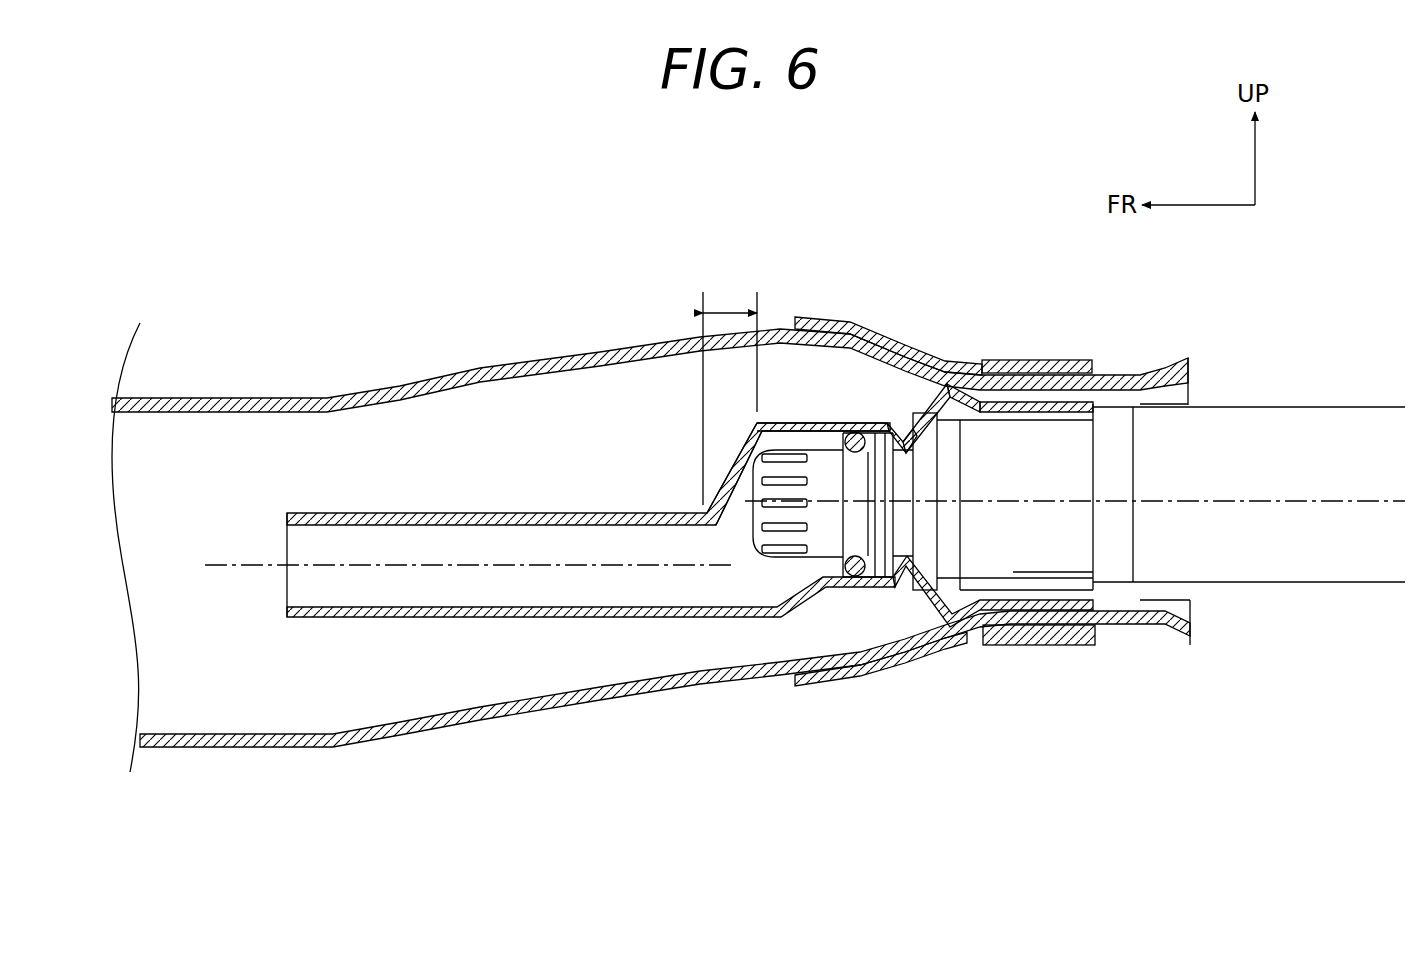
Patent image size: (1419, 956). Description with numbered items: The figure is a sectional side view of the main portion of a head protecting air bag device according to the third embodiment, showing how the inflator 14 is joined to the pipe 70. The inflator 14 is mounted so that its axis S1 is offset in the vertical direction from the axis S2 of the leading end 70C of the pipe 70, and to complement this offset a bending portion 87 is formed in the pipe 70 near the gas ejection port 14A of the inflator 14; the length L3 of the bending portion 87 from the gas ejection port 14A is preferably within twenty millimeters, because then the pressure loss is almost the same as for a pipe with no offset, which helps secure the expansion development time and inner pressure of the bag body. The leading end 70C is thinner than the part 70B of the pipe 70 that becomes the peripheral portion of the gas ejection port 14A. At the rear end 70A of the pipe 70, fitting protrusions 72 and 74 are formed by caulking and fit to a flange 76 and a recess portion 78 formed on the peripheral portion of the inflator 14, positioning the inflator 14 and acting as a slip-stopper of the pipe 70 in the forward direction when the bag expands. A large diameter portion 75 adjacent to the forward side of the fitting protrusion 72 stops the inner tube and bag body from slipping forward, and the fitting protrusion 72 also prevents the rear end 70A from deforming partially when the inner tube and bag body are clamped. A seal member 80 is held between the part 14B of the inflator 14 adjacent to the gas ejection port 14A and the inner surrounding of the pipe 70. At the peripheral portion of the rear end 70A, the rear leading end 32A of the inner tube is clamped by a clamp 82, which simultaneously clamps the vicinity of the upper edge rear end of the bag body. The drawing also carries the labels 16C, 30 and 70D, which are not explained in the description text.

The inflator 14 is at (1023, 499).
The gas ejection port 14A is at (778, 501).
The part of the inflator adjacent to the gas ejection port 14B is at (852, 513).
The reinforcing plate of outer duct 16C is at (830, 318).
The outer duct 30 is at (313, 396).
The rear leading end of the inner tube 32A is at (1143, 360).
The pipe 70 is at (709, 431).
The rear end of the pipe 70A is at (1085, 417).
The part of the pipe surrounding the gas ejection port 70B is at (788, 422).
The leading end of the pipe 70C is at (400, 513).
The end of inner pipe 70D is at (287, 580).
The fitting protrusion 72 is at (978, 410).
The fitting protrusion 74 is at (898, 447).
The large diameter portion 75 is at (947, 428).
The flange 76 is at (963, 370).
The recess portion 78 is at (895, 440).
The seal member 80 is at (848, 432).
The clamp 82 is at (1052, 358).
The bending portion 87 is at (727, 465).
The length of the bending portion from the gas ejection port L3 is at (736, 306).
The axis of the inflator S1 is at (1265, 500).
The axis of the leading end of the pipe S2 is at (552, 562).